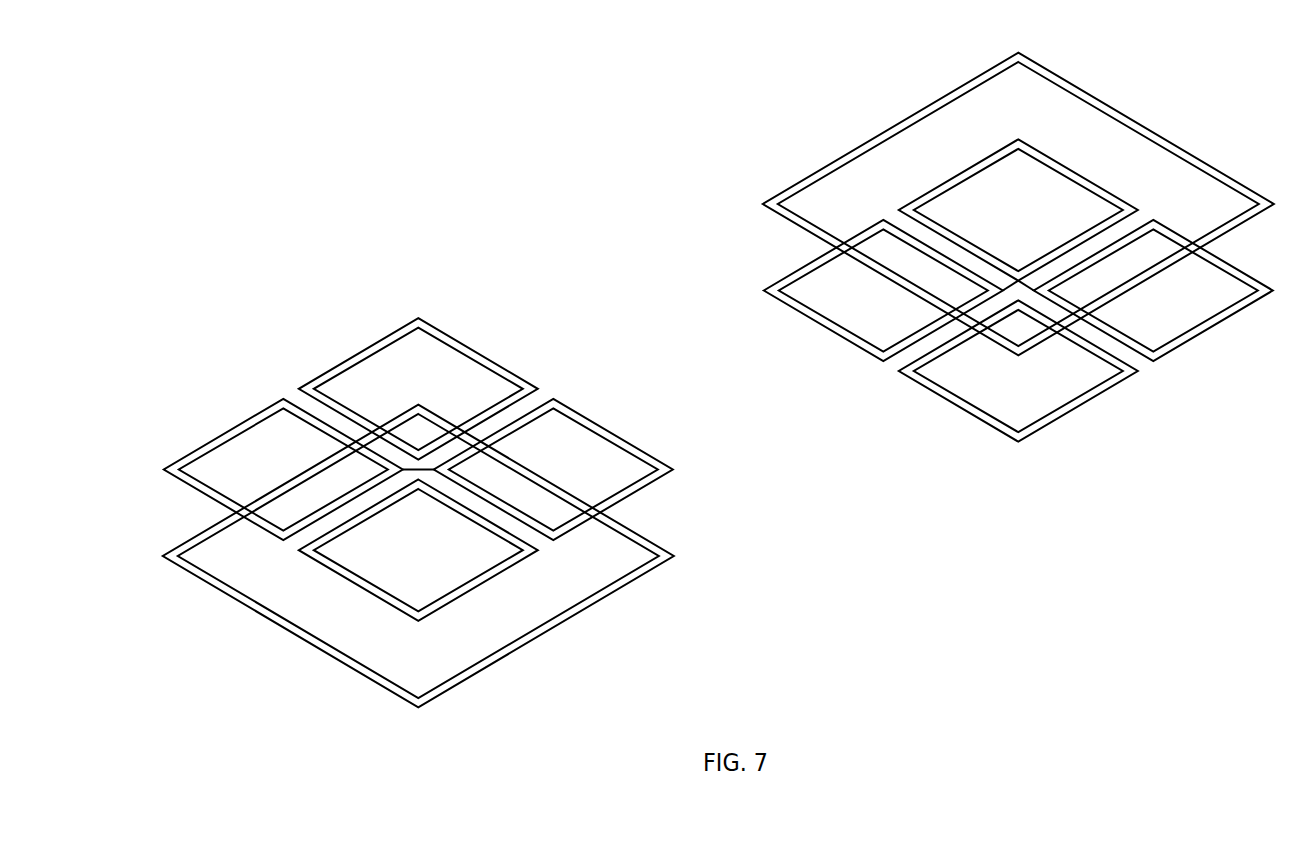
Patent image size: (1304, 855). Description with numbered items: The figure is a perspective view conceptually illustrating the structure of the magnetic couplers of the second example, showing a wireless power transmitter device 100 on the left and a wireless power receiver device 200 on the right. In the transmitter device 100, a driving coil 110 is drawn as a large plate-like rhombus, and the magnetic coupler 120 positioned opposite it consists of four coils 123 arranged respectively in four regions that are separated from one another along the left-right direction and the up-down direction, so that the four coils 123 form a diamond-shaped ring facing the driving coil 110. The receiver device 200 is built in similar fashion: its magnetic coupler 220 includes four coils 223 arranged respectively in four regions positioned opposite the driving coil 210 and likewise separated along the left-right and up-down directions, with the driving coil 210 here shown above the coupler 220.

The wireless power transmitter device 100 is at (596, 287).
The driving coil 110 is at (295, 635).
The magnetic coupler 120 is at (418, 456).
The coil 123 is at (482, 357).
The wireless power receiver device 200 is at (1256, 80).
The driving coil 210 is at (1133, 120).
The magnetic coupler 220 is at (1011, 290).
The coil 223 is at (832, 327).